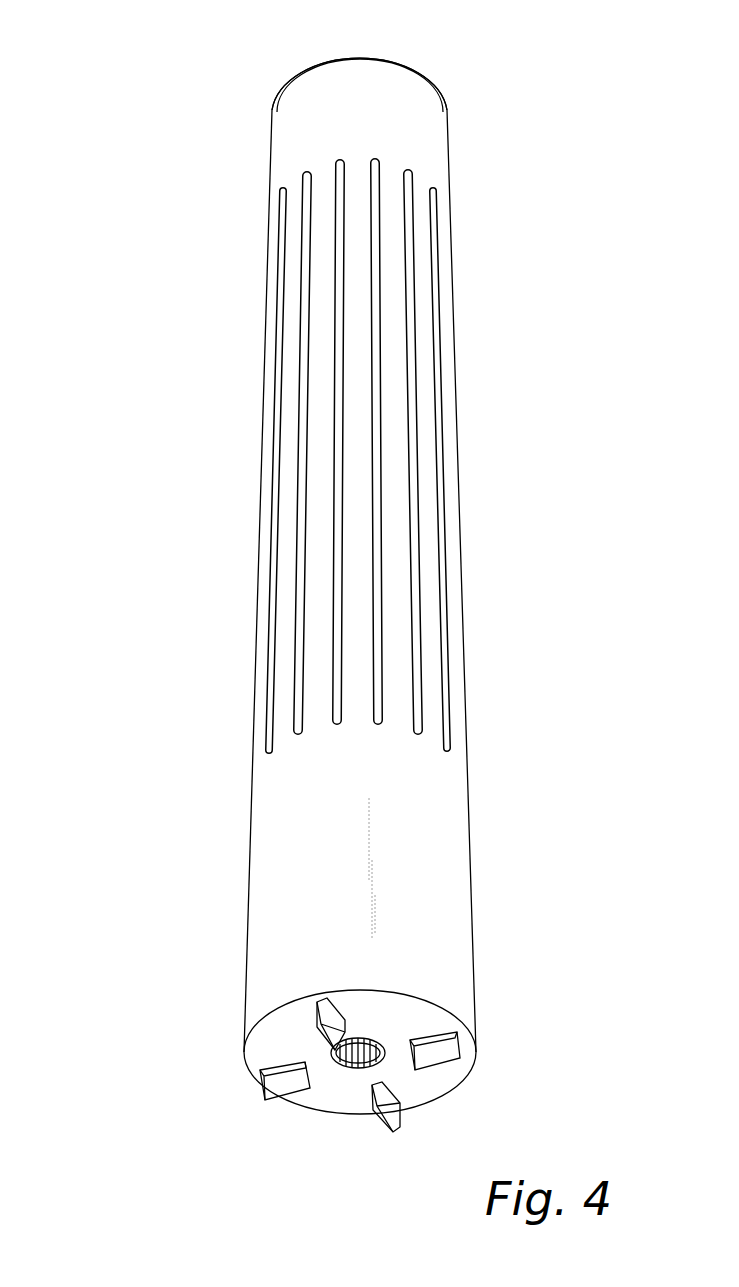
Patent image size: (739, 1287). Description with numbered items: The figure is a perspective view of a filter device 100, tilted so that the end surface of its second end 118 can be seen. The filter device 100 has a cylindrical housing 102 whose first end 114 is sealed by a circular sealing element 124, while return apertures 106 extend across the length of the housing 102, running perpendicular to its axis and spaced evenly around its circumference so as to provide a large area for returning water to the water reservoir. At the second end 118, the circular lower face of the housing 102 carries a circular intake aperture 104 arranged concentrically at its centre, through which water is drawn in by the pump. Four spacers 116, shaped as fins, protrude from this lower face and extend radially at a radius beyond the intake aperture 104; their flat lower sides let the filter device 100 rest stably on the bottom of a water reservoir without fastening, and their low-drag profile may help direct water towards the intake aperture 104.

The filter device 100 is at (178, 62).
The housing 102 is at (250, 858).
The intake aperture 104 is at (348, 1072).
The return apertures 106 is at (263, 435).
The first end 114 is at (465, 62).
The spacers 116 is at (317, 1012).
The second end 118 is at (493, 953).
The sealing element 124 is at (313, 62).